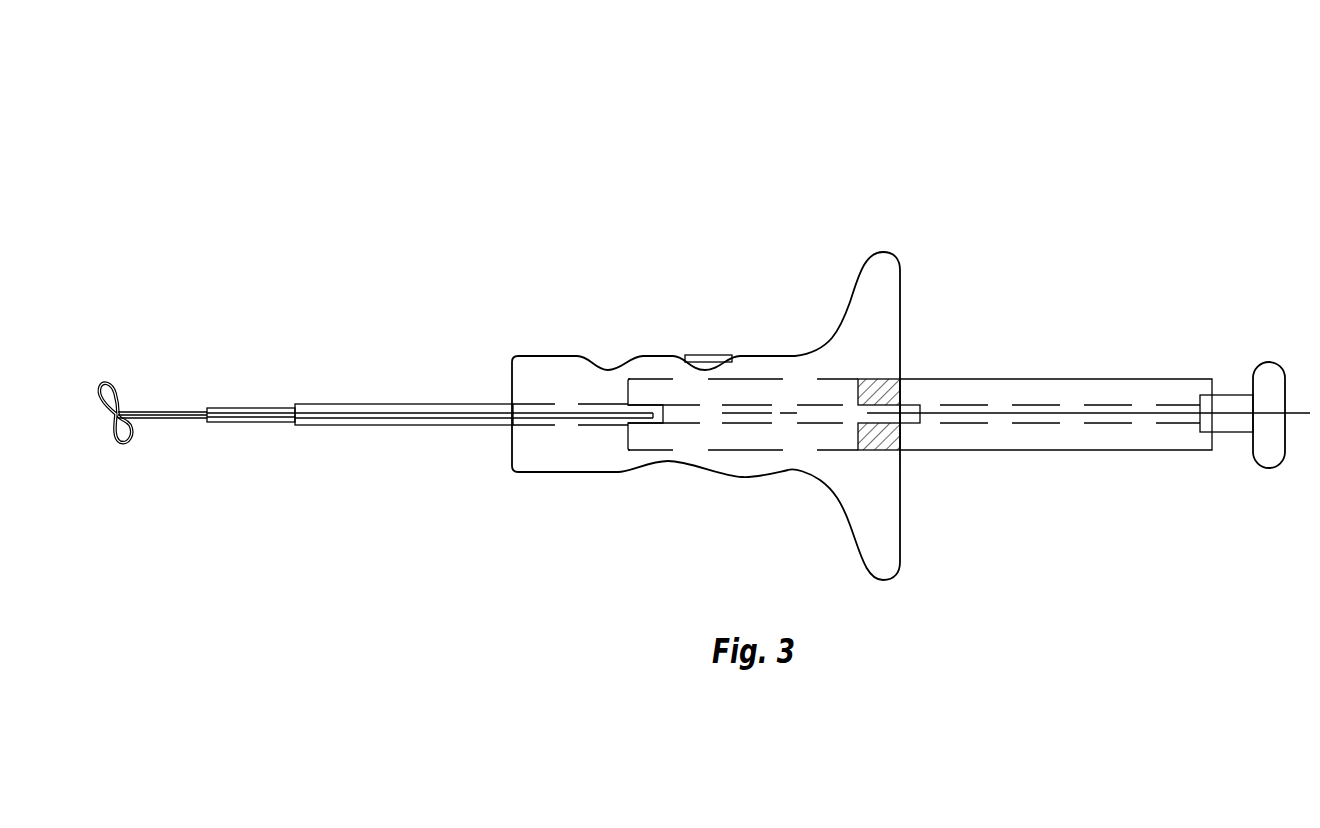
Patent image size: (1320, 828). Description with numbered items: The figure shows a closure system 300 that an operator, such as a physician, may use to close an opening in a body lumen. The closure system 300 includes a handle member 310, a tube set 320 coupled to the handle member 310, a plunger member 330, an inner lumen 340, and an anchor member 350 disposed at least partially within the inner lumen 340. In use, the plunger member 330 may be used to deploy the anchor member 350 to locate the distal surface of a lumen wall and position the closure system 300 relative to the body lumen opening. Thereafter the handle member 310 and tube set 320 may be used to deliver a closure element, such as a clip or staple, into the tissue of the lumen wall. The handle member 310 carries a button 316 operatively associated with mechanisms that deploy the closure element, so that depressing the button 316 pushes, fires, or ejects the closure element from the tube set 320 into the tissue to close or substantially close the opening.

The closure system 300 is at (288, 102).
The handle member 310 is at (714, 218).
The button 316 is at (712, 353).
The tube set 320 is at (390, 404).
The plunger member 330 is at (1036, 378).
The inner lumen 340 is at (251, 408).
The anchor member 350 is at (132, 463).